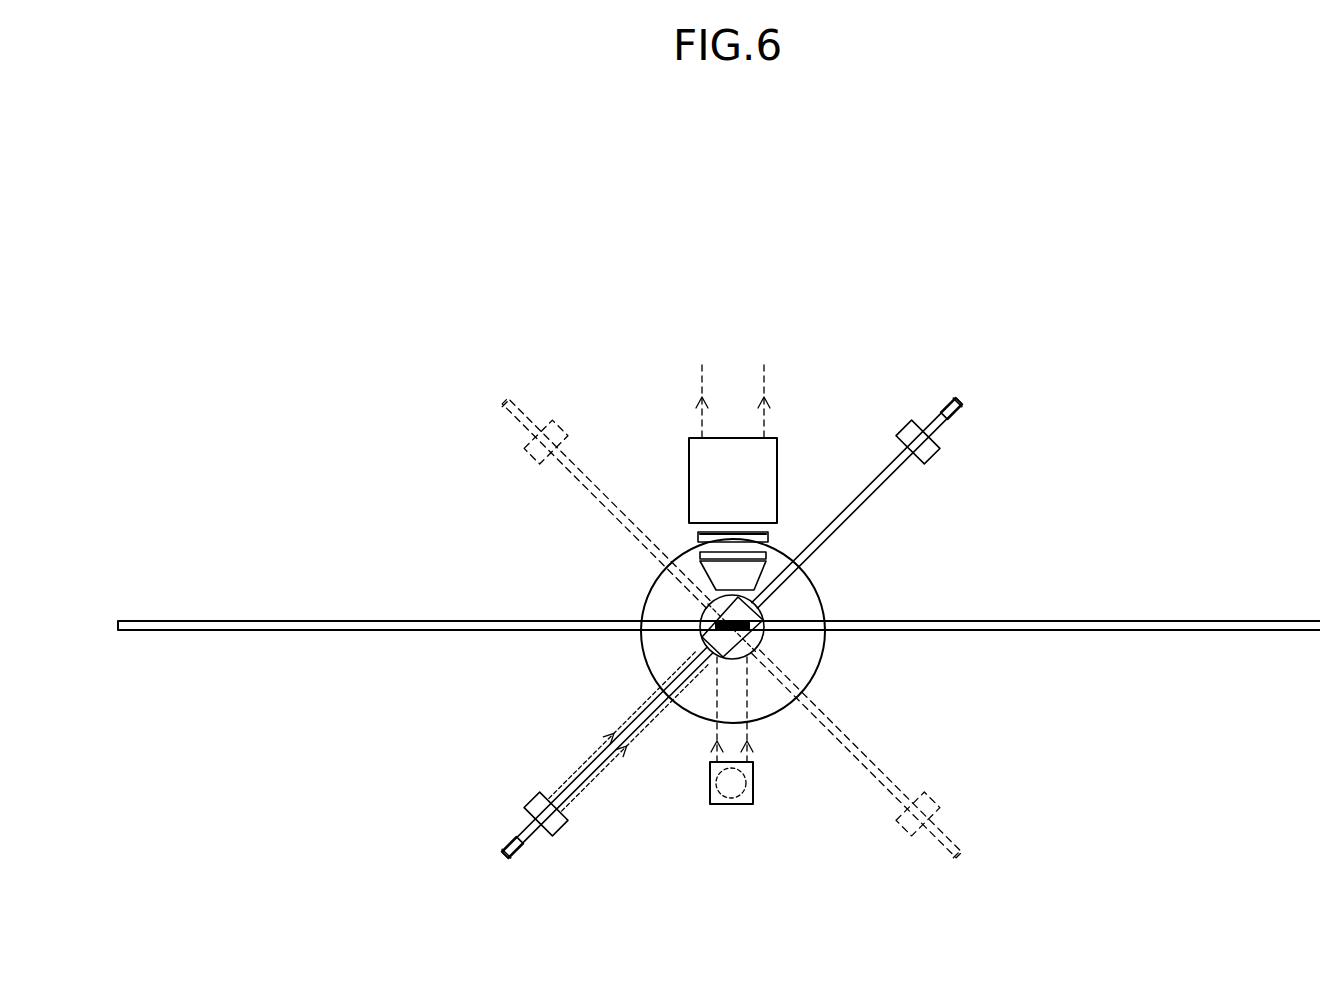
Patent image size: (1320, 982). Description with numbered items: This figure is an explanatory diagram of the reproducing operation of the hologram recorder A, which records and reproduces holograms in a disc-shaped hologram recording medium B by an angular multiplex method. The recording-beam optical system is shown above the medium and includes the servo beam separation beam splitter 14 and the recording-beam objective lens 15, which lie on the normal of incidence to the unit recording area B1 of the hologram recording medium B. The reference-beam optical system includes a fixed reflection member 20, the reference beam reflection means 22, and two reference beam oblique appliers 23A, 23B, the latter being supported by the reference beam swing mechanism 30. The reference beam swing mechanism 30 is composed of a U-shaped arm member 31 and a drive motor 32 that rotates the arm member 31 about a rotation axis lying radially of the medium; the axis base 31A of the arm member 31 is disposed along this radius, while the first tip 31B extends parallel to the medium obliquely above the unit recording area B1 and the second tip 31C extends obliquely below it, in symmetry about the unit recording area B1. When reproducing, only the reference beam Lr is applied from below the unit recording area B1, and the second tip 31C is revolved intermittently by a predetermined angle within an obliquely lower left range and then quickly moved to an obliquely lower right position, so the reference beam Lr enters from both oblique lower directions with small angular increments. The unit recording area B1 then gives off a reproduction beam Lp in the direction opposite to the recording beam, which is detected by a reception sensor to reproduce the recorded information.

The servo beam separation beam splitter 14 is at (777, 438).
The recording-beam objective lens 15 is at (700, 556).
The fixed reflection member 20 is at (740, 805).
The reference beam reflection means 22 is at (758, 656).
The reference beam oblique applier 23A is at (936, 456).
The reference beam oblique applier 23B is at (560, 826).
The reference beam swing mechanism 30 is at (1014, 516).
The arm member 31 is at (866, 505).
The axis base 31A is at (770, 636).
The first tip 31B is at (945, 415).
The second tip 31C is at (505, 858).
The drive motor 32 is at (816, 579).
The hologram recorder A is at (730, 312).
The hologram recording medium B is at (1278, 621).
The unit recording area B1 is at (766, 617).
The reproduction beam Lp is at (706, 606).
The reference beam Lr is at (617, 762).